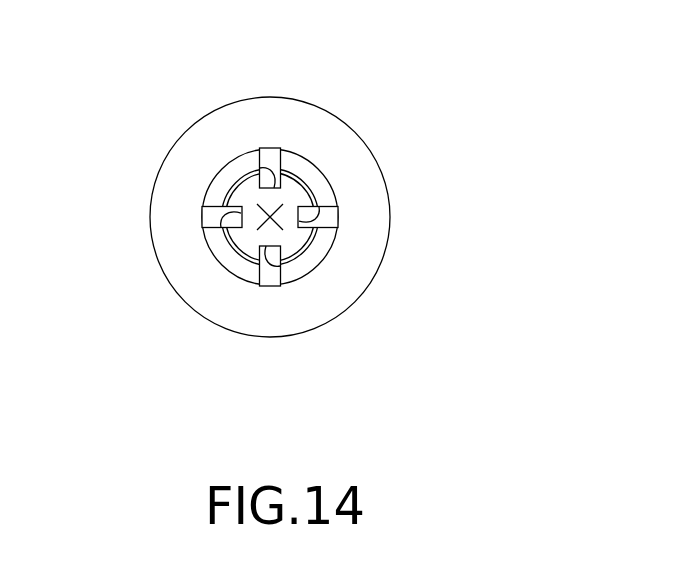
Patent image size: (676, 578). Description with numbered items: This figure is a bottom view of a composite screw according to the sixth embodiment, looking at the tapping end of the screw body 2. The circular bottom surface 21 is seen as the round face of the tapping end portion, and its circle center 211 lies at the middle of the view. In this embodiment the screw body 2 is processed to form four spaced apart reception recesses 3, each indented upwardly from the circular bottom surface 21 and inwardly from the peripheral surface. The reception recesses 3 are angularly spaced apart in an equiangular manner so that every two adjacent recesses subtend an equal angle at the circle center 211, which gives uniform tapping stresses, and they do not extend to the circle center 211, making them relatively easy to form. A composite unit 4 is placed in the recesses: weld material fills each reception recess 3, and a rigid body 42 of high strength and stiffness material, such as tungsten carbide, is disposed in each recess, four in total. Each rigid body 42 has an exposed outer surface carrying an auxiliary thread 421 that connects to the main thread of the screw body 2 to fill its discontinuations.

The screw body 2 is at (453, 97).
The reception recess 3 is at (258, 181).
The composite unit 4 is at (273, 216).
The circular bottom surface 21 is at (258, 258).
The circle center 211 is at (255, 246).
The rigid body 42 is at (260, 218).
The auxiliary thread 421 is at (267, 157).